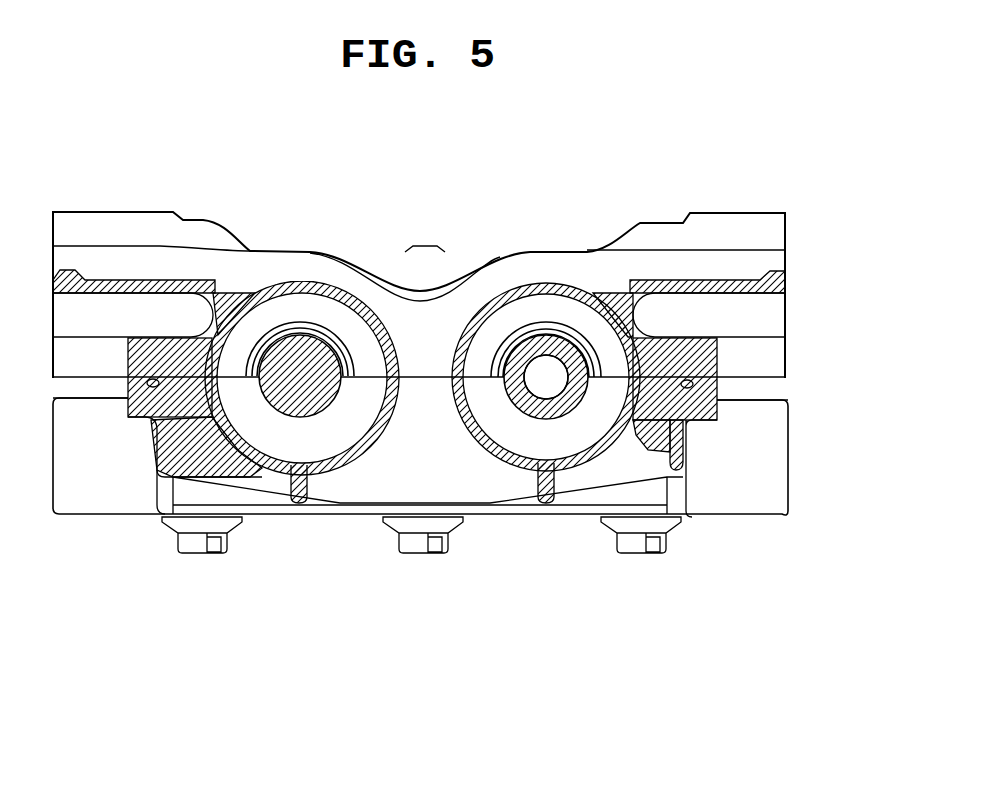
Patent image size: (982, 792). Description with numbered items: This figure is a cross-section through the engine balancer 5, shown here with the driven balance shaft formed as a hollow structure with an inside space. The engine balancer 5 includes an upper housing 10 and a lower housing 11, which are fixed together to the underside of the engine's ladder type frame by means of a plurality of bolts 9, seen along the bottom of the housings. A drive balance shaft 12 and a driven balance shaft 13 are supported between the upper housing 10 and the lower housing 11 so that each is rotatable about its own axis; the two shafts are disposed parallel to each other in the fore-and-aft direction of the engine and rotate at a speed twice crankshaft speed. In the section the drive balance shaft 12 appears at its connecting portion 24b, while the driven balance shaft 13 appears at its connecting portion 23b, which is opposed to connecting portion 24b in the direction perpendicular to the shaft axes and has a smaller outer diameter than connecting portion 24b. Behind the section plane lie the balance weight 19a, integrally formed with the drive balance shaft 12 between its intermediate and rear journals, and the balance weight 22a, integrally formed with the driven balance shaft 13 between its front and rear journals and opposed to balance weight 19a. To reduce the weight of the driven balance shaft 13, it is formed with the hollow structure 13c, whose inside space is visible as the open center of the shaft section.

The engine balancer 5 is at (808, 268).
The bolts 9 is at (195, 545).
The upper housing 10 is at (745, 323).
The lower housing 11 is at (745, 477).
The drive balance shaft 12 is at (281, 424).
The driven balance shaft 13 is at (512, 428).
The hollow structure 13c is at (548, 395).
The balance weight 19a is at (330, 432).
The balance weight 22a is at (570, 442).
The connecting portion 23b is at (585, 393).
The connecting portion 24b is at (338, 402).